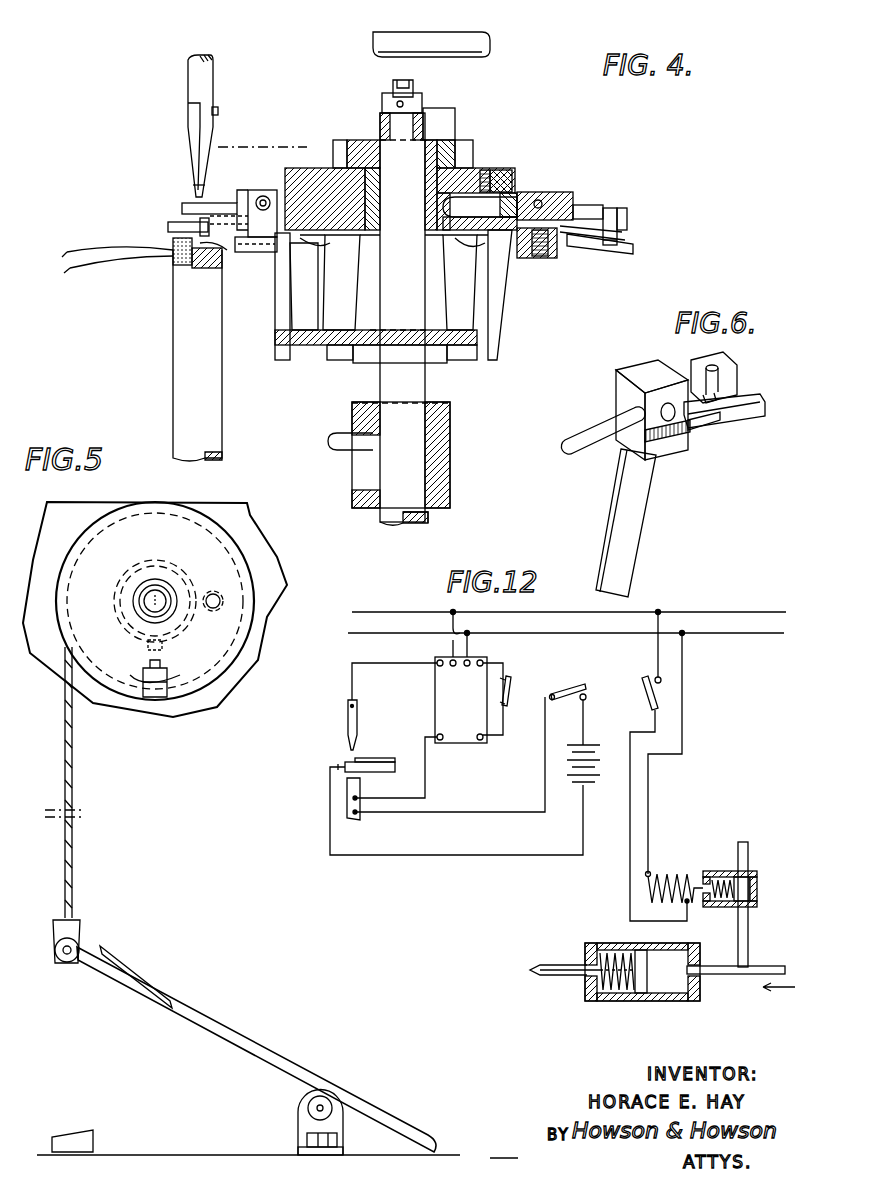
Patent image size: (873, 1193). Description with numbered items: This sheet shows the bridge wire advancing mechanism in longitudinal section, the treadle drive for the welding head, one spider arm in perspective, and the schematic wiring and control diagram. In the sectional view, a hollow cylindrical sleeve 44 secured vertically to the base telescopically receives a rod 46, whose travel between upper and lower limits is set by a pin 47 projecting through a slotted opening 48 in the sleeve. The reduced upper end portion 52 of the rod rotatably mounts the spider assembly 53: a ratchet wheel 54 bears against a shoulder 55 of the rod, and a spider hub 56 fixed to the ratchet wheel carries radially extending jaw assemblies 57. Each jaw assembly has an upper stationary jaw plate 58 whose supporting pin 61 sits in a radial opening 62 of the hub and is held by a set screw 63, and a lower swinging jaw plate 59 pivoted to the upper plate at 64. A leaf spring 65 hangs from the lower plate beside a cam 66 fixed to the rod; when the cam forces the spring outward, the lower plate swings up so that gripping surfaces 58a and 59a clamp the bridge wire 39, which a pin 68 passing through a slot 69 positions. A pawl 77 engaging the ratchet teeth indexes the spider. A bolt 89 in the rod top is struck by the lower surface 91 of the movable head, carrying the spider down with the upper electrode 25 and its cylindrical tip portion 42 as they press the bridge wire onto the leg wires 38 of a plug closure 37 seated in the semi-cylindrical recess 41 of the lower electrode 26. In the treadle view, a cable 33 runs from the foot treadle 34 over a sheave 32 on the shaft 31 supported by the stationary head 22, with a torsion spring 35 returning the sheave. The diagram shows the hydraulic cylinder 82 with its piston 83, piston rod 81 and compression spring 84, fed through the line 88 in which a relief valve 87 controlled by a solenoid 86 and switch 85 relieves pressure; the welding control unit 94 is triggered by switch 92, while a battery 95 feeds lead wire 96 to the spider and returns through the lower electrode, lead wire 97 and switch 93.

In FIG. 5, the stationary head 22 is at (250, 530).
In FIG. 4, the upper electrode 25 is at (197, 77).
In FIG. 12, the upper electrode 25 is at (348, 722).
In FIG. 4, the lower electrode 26 is at (183, 366).
In FIG. 12, the lower electrode 26 is at (360, 818).
In FIG. 5, the shaft 31 is at (163, 606).
In FIG. 5, the sheave 32 is at (143, 503).
In FIG. 5, the cable 33 is at (72, 745).
In FIG. 5, the foot treadle 34 is at (213, 1013).
In FIG. 5, the torsion spring 35 is at (182, 557).
In FIG. 4, the plug closure 37 is at (173, 255).
In FIG. 4, the leg wires 38 is at (70, 268).
In FIG. 4, the bridge wire 39 is at (560, 245).
In FIG. 4, the semi-cylindrical recess 41 is at (195, 268).
In FIG. 4, the cylindrical tip portion 42 is at (197, 187).
In FIG. 4, the cylindrical sleeve 44 is at (442, 450).
In FIG. 4, the rod 46 is at (428, 522).
In FIG. 4, the pin 47 is at (332, 441).
In FIG. 4, the slotted opening 48 is at (367, 488).
In FIG. 4, the reduced upper end portion 52 is at (387, 150).
In FIG. 4, the spider assembly 53 is at (258, 147).
In FIG. 4, the ratchet wheel 54 is at (333, 143).
In FIG. 4, the shoulder 55 is at (394, 228).
In FIG. 4, the spider hub 56 is at (515, 190).
In FIG. 4, the jaw assembly 57 is at (174, 211).
In FIG. 6, the jaw assembly 57 is at (640, 372).
In FIG. 12, the jaw assembly 57 is at (375, 762).
In FIG. 4, the upper stationary jaw plate 58 is at (628, 215).
In FIG. 6, the upper stationary jaw plate 58 is at (730, 370).
In FIG. 4, the gripping surface 58a is at (622, 232).
In FIG. 4, the lower swinging jaw plate 59 is at (633, 250).
In FIG. 6, the lower swinging jaw plate 59 is at (748, 423).
In FIG. 4, the gripping surface 59a is at (630, 241).
In FIG. 4, the supporting pin 61 is at (513, 203).
In FIG. 6, the supporting pin 61 is at (610, 428).
In FIG. 4, the radial opening 62 is at (500, 177).
In FIG. 4, the set screw 63 is at (484, 170).
In FIG. 4, the pivot 64 is at (263, 196).
In FIG. 6, the pivot 64 is at (695, 430).
In FIG. 4, the leaf spring 65 is at (330, 303).
In FIG. 6, the leaf spring 65 is at (635, 503).
In FIG. 4, the cam 66 is at (314, 345).
In FIG. 4, the pin 68 is at (168, 236).
In FIG. 4, the slot 69 is at (555, 248).
In FIG. 4, the pawl 77 is at (465, 140).
In FIG. 12, the piston rod 81 is at (545, 965).
In FIG. 12, the hydraulic cylinder 82 is at (620, 1001).
In FIG. 12, the piston 83 is at (647, 957).
In FIG. 12, the compression spring 84 is at (615, 950).
In FIG. 12, the switch 85 is at (645, 695).
In FIG. 12, the solenoid 86 is at (672, 874).
In FIG. 12, the relief valve 87 is at (752, 875).
In FIG. 12, the line 88 is at (725, 975).
In FIG. 4, the bolt 89 is at (413, 84).
In FIG. 4, the lower surface of the movable head 91 is at (373, 36).
In FIG. 12, the switch 92 is at (509, 680).
In FIG. 12, the switch 93 is at (580, 684).
In FIG. 12, the welding control unit 94 is at (443, 700).
In FIG. 12, the battery 95 is at (605, 768).
In FIG. 12, the lead wire 96 is at (495, 855).
In FIG. 12, the lead wire 97 is at (479, 812).